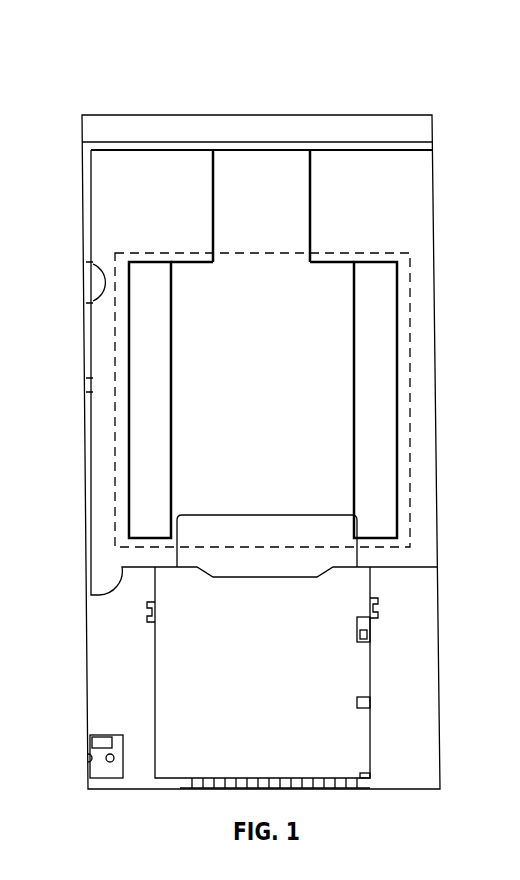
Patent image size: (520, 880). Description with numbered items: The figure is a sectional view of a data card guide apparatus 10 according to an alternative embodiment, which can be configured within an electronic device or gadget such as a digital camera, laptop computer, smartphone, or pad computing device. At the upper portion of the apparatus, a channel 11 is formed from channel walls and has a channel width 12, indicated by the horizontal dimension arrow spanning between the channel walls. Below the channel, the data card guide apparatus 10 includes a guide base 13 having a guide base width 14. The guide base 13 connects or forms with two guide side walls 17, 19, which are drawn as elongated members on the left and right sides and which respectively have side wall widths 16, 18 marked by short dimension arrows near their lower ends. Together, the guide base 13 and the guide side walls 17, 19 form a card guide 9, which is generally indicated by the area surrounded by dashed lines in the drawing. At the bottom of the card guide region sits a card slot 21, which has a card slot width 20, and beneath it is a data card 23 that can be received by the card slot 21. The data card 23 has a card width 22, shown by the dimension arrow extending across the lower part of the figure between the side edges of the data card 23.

The data card guide apparatus 10 is at (66, 100).
The channel 11 is at (287, 167).
The channel width 12 is at (213, 194).
The card guide 9 is at (343, 252).
The guide base 13 is at (352, 290).
The guide base width 14 is at (354, 318).
The side wall width 16 is at (129, 475).
The guide side wall 17 is at (143, 372).
The side wall width 18 is at (397, 475).
The guide side wall 19 is at (380, 357).
The card slot width 20 is at (177, 547).
The card slot 21 is at (242, 532).
The card width 22 is at (370, 724).
The data card 23 is at (350, 733).